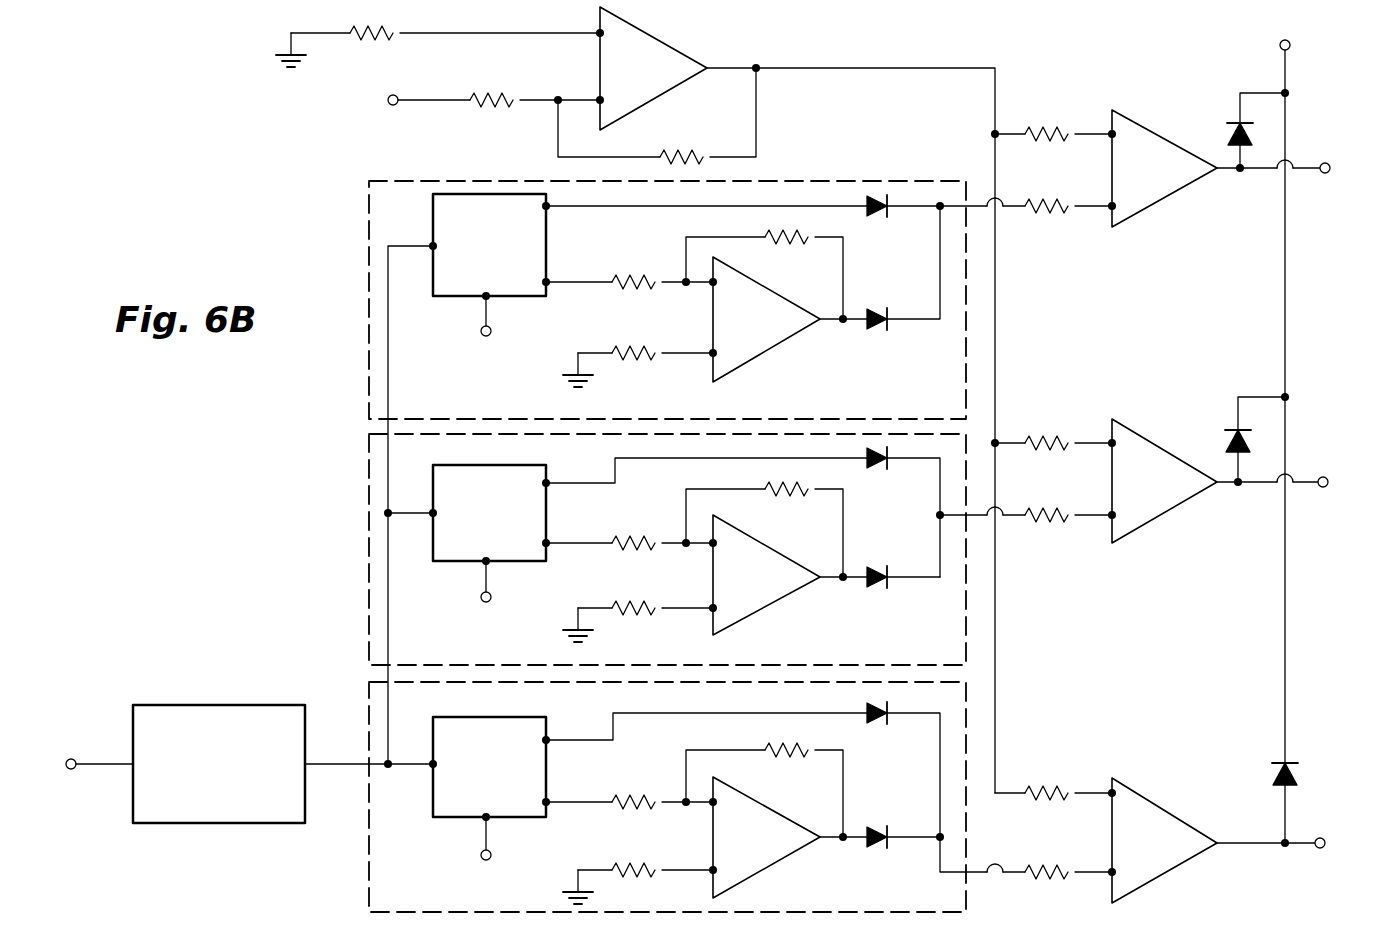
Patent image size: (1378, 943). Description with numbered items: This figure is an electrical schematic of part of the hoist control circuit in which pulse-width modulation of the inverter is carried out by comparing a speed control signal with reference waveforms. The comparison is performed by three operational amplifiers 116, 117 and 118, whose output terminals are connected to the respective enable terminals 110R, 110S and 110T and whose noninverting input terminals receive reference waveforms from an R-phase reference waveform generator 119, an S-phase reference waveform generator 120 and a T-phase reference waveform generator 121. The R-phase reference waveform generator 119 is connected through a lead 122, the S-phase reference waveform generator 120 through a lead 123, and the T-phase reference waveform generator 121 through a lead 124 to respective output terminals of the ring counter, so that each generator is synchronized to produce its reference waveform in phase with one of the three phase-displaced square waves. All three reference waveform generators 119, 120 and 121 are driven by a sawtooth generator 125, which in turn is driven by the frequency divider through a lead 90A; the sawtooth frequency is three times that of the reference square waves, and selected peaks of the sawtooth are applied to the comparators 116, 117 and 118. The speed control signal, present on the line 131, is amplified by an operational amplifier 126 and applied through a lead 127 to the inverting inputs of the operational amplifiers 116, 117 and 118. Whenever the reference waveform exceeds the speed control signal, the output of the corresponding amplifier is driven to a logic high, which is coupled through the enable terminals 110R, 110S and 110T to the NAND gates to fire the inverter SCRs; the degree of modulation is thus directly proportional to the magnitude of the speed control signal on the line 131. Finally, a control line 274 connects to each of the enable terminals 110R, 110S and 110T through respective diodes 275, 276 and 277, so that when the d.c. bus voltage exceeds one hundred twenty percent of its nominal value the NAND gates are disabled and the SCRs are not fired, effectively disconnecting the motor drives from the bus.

The lead 90A is at (72, 758).
The sawtooth generator 125 is at (230, 698).
The operational amplifier 126 is at (653, 68).
The lead 127 is at (896, 67).
The line 131 is at (388, 101).
The R-phase reference waveform generator 119 is at (362, 235).
The S-phase reference waveform generator 120 is at (362, 490).
The T-phase reference waveform generator 121 is at (362, 858).
The lead 122 is at (485, 337).
The lead 123 is at (486, 603).
The lead 124 is at (483, 860).
The operational amplifier 116 is at (1164, 168).
The operational amplifier 117 is at (1164, 481).
The operational amplifier 118 is at (1164, 840).
The control line 274 is at (1279, 46).
The diode 275 is at (1226, 137).
The diode 276 is at (1228, 440).
The diode 277 is at (1270, 782).
The enable terminal 110R is at (1325, 174).
The enable terminal 110S is at (1320, 477).
The enable terminal 110T is at (1320, 837).